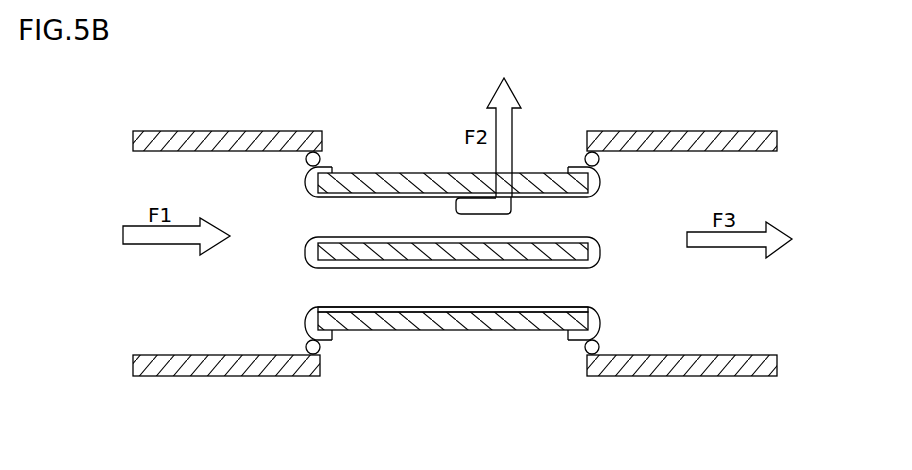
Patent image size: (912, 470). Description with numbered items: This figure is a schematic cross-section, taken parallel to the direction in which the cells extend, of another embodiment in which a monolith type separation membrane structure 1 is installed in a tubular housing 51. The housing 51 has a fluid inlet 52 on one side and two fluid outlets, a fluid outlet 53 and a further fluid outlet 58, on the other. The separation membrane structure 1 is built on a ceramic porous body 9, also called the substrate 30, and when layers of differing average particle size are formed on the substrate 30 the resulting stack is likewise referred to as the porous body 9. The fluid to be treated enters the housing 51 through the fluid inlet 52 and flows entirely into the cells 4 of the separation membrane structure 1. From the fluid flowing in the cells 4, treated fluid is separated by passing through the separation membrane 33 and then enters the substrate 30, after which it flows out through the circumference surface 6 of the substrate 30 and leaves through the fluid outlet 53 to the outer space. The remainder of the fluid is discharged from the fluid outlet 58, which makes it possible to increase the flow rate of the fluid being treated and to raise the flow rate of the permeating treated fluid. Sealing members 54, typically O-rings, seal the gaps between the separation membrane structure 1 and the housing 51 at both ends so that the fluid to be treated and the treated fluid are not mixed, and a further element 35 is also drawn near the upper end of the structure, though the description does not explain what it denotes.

The separation membrane structure 1 is at (456, 338).
The cells 4 is at (497, 283).
The circumference surface 6 is at (404, 172).
The ceramic porous body 9 is at (452, 388).
The substrate 30 is at (417, 318).
The separation membrane 33 is at (373, 330).
The upper spacer balls 35 is at (331, 165).
The housing 51 is at (684, 126).
The fluid inlet 52 is at (165, 305).
The fluid outlet 53 is at (563, 147).
The sealing members 54 is at (316, 353).
The fluid outlet 58 is at (745, 174).